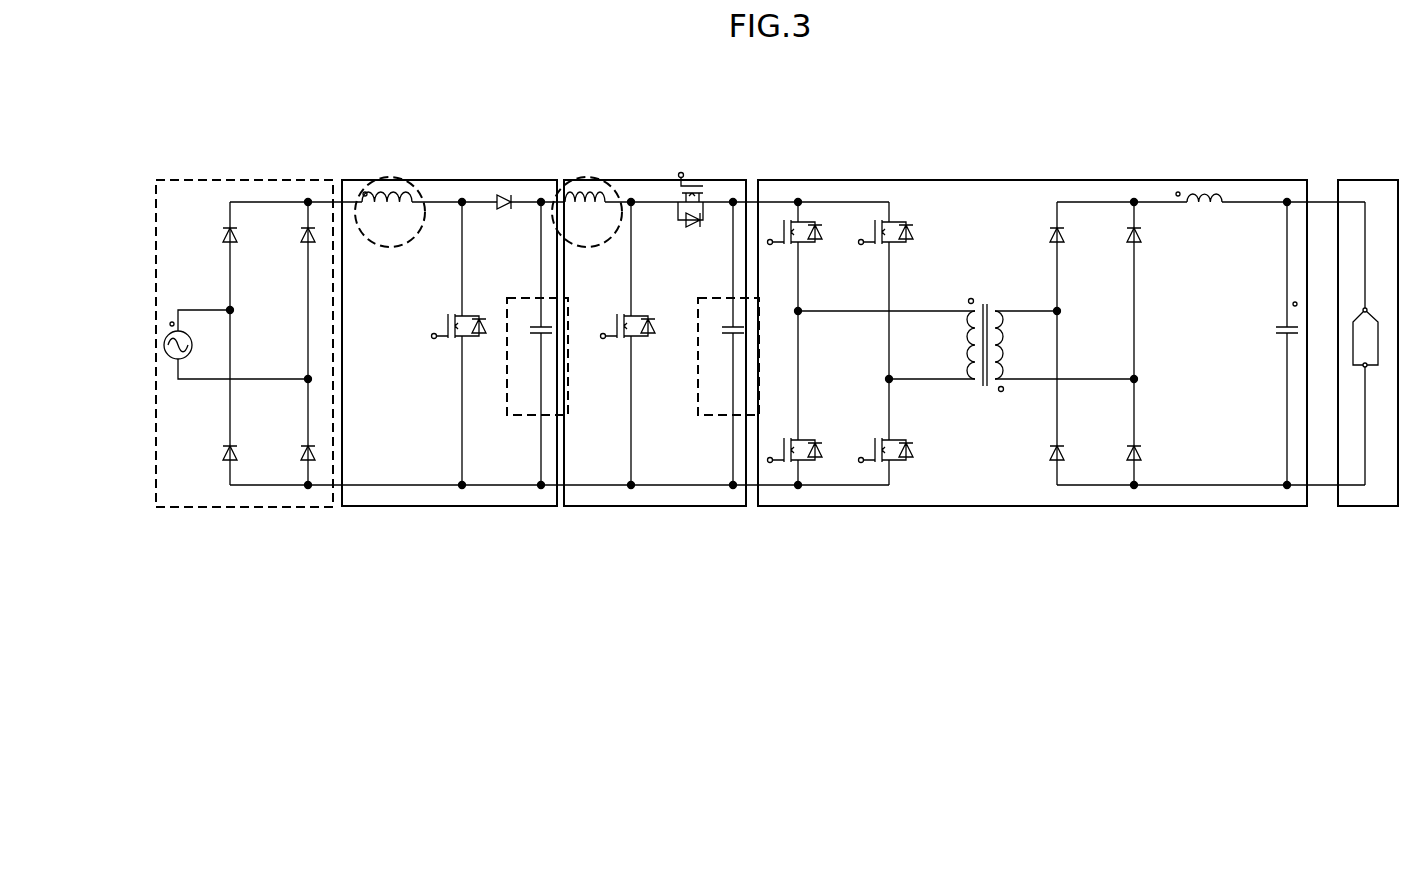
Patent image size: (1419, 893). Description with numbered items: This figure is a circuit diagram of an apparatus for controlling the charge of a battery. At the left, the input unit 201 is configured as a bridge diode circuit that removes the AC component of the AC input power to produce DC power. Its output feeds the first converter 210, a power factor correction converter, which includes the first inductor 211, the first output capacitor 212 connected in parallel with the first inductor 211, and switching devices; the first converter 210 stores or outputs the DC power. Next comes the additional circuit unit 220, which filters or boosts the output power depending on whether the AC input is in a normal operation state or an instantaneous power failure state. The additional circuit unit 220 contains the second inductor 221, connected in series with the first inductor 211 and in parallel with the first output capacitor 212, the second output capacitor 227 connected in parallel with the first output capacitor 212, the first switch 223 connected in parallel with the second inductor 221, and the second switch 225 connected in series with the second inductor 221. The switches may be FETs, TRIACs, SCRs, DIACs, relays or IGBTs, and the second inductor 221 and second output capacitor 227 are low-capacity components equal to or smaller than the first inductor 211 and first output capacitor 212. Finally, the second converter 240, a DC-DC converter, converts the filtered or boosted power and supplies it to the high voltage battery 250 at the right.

The input unit 201 is at (245, 178).
The first converter 210 is at (455, 329).
The first inductor 211 is at (420, 187).
The first output capacitor 212 is at (525, 416).
The additional circuit unit 220 is at (675, 330).
The second inductor 221 is at (608, 177).
The first switch 223 is at (616, 341).
The second switch 225 is at (693, 186).
The second output capacitor 227 is at (717, 416).
The second converter 240 is at (1032, 180).
The high voltage battery 250 is at (1368, 180).